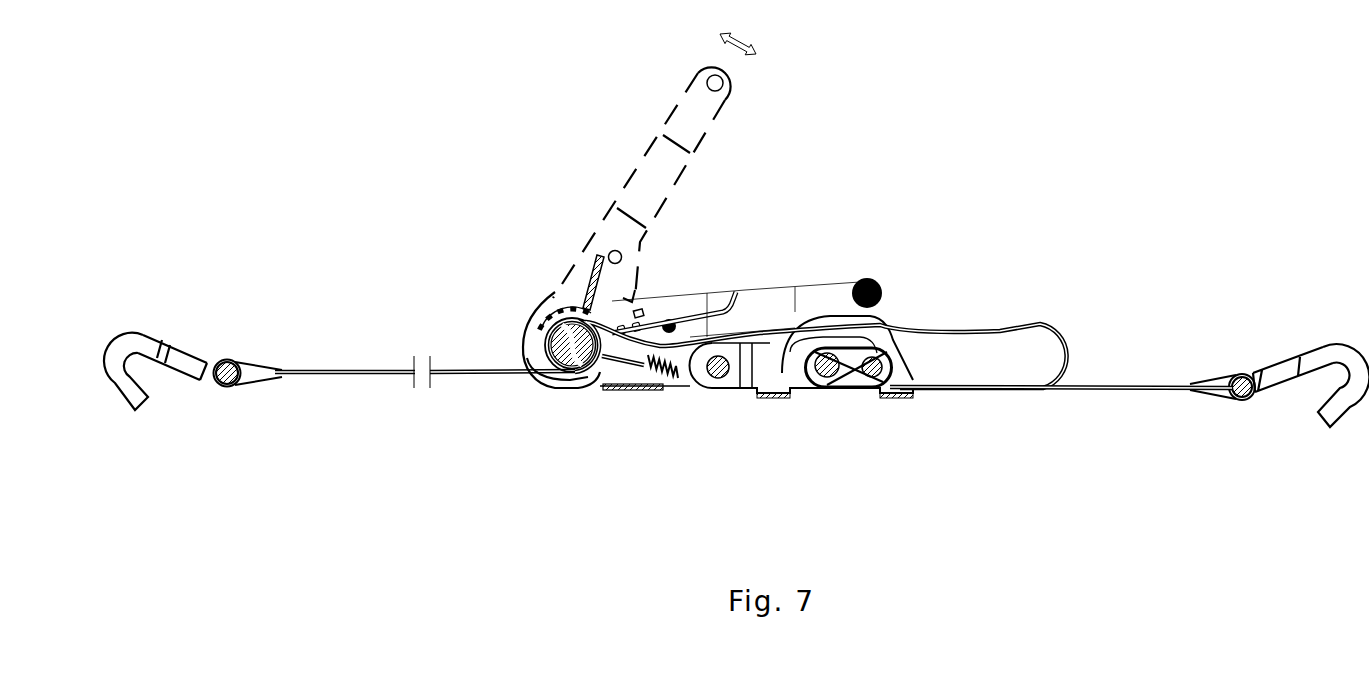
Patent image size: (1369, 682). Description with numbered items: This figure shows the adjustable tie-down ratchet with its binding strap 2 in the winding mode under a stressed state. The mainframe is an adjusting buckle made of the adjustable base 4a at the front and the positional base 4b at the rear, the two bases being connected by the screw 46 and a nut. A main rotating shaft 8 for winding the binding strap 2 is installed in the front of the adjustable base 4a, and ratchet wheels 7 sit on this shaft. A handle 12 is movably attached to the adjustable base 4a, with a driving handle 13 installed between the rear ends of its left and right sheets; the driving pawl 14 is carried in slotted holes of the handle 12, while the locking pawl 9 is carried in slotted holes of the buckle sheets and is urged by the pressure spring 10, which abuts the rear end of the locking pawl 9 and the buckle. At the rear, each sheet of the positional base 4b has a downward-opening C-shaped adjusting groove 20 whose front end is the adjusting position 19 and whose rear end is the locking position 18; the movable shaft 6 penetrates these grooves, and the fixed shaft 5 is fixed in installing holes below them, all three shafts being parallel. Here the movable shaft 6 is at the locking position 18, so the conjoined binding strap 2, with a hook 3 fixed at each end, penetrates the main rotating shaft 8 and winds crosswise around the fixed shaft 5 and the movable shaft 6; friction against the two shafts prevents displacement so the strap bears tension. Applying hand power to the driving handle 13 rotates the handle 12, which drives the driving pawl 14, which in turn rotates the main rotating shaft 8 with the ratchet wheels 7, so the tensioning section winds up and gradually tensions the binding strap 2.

The binding strap 2 is at (315, 375).
The hook 3 is at (132, 338).
The adjustable base 4a is at (600, 390).
The positional base 4b is at (785, 395).
The fixed shaft 5 is at (840, 390).
The movable shaft 6 is at (895, 390).
The ratchet wheel 7 is at (532, 347).
The main rotating shaft 8 is at (548, 342).
The locking pawl 9 is at (640, 390).
The pressure spring 10 is at (660, 392).
The handle 12 is at (782, 292).
The driving handle 13 is at (884, 283).
The driving pawl 14 is at (702, 293).
The locking position 18 is at (903, 327).
The adjusting position 19 is at (790, 368).
The adjusting groove 20 is at (885, 318).
The screw 46 is at (720, 385).